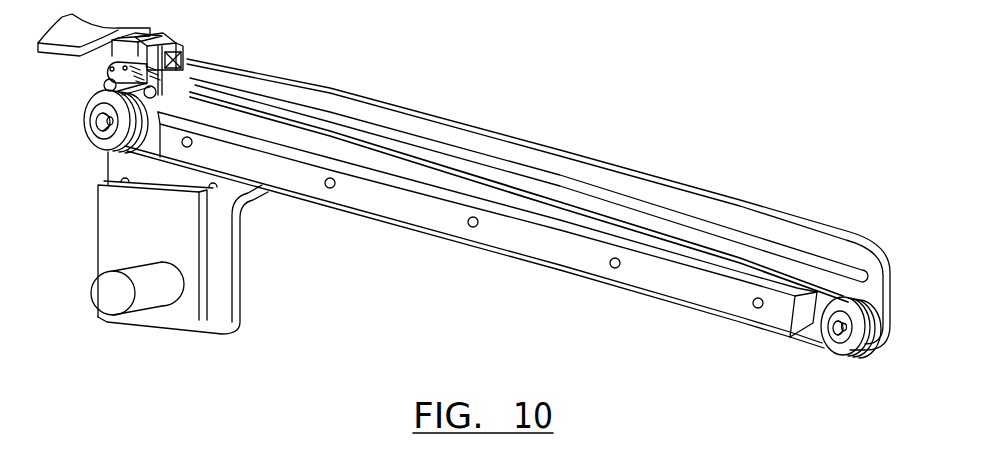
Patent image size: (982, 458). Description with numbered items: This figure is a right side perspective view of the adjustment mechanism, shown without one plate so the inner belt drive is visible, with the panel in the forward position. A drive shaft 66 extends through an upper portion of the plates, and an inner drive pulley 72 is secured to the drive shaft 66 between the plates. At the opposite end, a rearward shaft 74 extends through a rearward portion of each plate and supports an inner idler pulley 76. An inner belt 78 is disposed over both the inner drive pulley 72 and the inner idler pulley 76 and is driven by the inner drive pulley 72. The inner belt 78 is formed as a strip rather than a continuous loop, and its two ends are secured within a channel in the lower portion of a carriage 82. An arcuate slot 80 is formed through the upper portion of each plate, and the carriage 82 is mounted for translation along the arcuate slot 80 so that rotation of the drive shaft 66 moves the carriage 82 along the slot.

The drive shaft 66 is at (100, 124).
The inner drive pulley 72 is at (85, 119).
The rearward shaft 74 is at (835, 331).
The inner idler pulley 76 is at (846, 353).
The inner belt 78 is at (692, 312).
The arcuate slot 80 is at (678, 211).
The carriage 82 is at (185, 50).